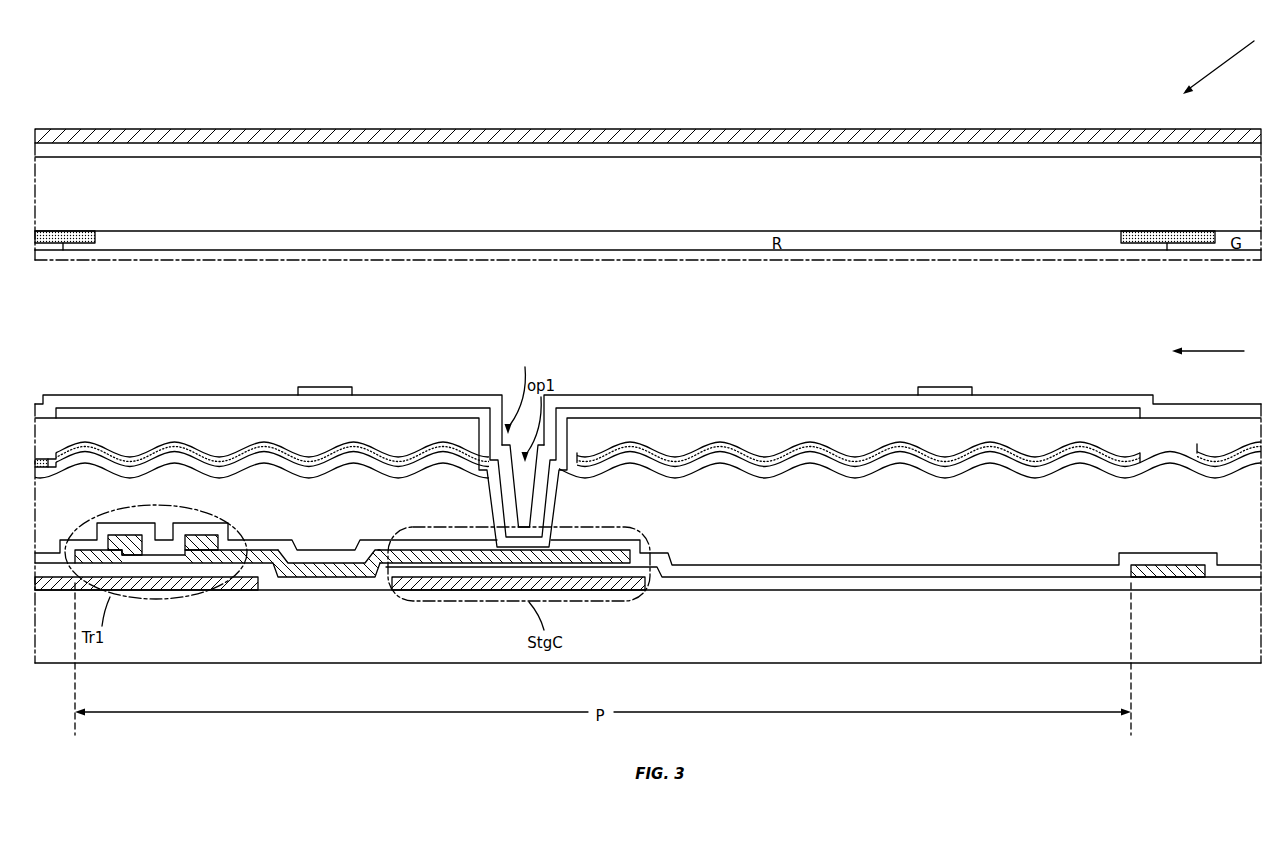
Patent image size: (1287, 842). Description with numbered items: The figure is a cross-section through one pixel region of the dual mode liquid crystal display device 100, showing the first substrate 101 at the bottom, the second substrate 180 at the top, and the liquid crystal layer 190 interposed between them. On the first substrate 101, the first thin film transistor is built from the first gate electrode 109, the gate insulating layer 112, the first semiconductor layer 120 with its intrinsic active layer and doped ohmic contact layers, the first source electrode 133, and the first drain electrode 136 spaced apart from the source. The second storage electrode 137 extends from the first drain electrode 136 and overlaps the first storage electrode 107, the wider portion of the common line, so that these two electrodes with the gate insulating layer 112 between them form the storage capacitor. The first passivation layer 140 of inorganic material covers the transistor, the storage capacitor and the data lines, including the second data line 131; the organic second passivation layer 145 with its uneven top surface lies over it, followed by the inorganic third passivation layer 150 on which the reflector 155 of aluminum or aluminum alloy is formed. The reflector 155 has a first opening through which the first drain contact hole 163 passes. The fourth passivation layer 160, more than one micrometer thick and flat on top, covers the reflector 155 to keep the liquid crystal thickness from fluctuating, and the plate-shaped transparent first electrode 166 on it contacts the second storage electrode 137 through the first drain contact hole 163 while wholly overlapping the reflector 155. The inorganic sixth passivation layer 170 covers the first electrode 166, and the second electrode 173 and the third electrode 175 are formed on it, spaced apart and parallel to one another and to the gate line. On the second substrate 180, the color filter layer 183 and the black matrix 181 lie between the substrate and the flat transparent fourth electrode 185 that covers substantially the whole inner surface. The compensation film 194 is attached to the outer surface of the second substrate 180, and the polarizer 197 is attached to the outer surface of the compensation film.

The dual mode liquid crystal display device 100 is at (1218, 57).
The first substrate 101 is at (1242, 657).
The first storage electrode 107 is at (452, 591).
The first gate electrode 109 is at (152, 590).
The gate insulating layer 112 is at (813, 579).
The first semiconductor layer 120 is at (183, 562).
The second data line 131 is at (1165, 566).
The first source electrode 133 is at (118, 536).
The first drain electrode 136 is at (192, 536).
The second storage electrode 137 is at (435, 551).
The first passivation layer 140 is at (940, 567).
The second passivation layer 145 is at (643, 473).
The third passivation layer 150 is at (312, 477).
The reflector 155 is at (402, 464).
The fourth passivation layer 160 is at (119, 428).
The first drain contact hole 163 is at (523, 437).
The first electrode 166 is at (188, 413).
The sixth passivation layer 170 is at (396, 403).
The second electrode 173 is at (325, 388).
The third electrode 175 is at (940, 388).
The second substrate 180 is at (1223, 194).
The black matrix 181 is at (70, 231).
The color filter layer 183 is at (285, 240).
The fourth electrode 185 is at (219, 252).
The liquid crystal layer 190 is at (1224, 351).
The compensation film 194 is at (537, 153).
The polarizer 197 is at (688, 130).